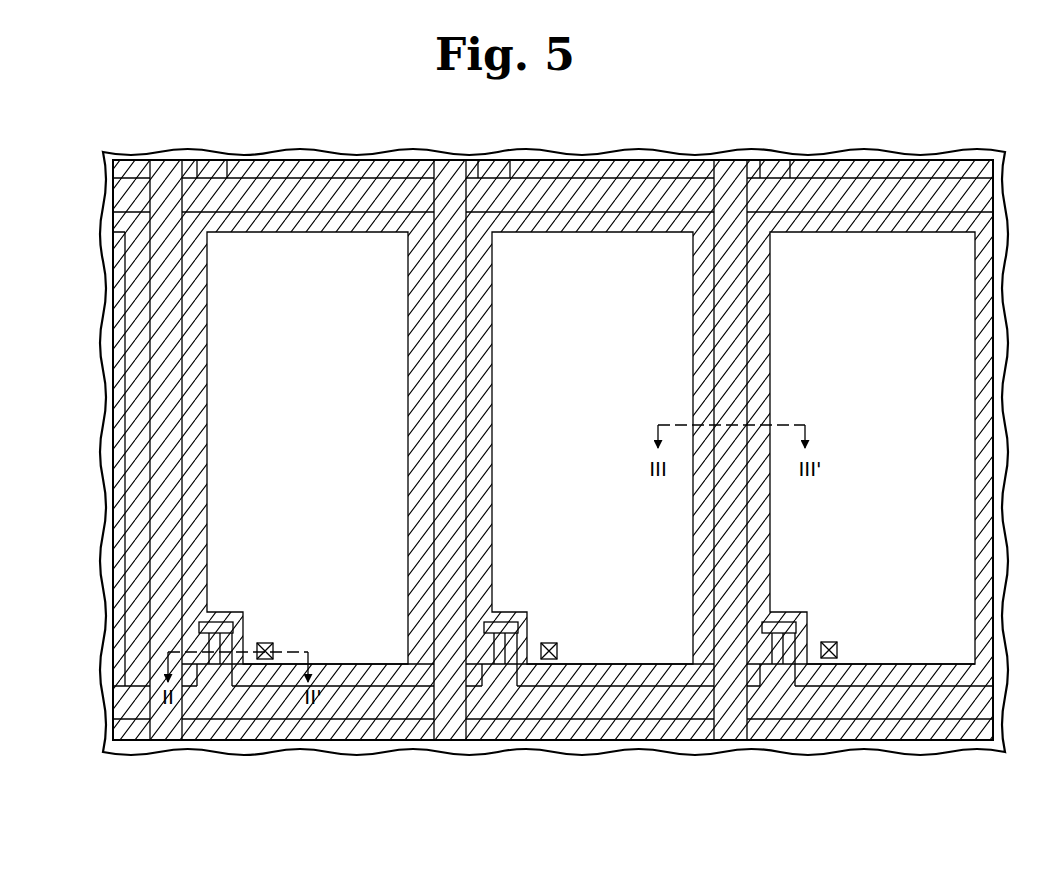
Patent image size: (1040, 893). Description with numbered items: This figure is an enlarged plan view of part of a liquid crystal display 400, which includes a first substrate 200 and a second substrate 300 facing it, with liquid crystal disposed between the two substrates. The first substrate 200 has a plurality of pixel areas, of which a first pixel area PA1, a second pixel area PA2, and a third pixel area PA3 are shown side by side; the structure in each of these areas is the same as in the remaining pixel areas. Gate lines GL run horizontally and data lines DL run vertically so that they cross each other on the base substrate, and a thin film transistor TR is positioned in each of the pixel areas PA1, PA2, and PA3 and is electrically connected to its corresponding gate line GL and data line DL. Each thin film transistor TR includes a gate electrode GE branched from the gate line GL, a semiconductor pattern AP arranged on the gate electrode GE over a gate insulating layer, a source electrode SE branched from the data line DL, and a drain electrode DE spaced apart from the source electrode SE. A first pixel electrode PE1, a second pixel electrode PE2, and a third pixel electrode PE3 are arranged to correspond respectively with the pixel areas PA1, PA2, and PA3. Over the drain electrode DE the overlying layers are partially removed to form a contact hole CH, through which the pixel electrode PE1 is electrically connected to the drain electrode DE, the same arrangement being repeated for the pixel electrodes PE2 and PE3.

The first pixel electrode PE1 is at (304, 236).
The second pixel electrode PE2 is at (588, 236).
The third pixel electrode PE3 is at (872, 236).
The first pixel area PA1 is at (304, 327).
The second pixel area PA2 is at (581, 327).
The third pixel area PA3 is at (877, 327).
The data line DL is at (166, 380).
The gate line GL is at (360, 705).
The contact hole CH is at (265, 641).
The thin film transistor TR is at (228, 746).
The source electrode SE is at (209, 666).
The gate electrode GE is at (215, 666).
The semiconductor pattern AP is at (222, 668).
The drain electrode DE is at (236, 668).
The first substrate 200 is at (940, 815).
The second substrate 300 is at (918, 756).
The liquid crystal display 400 is at (554, 498).